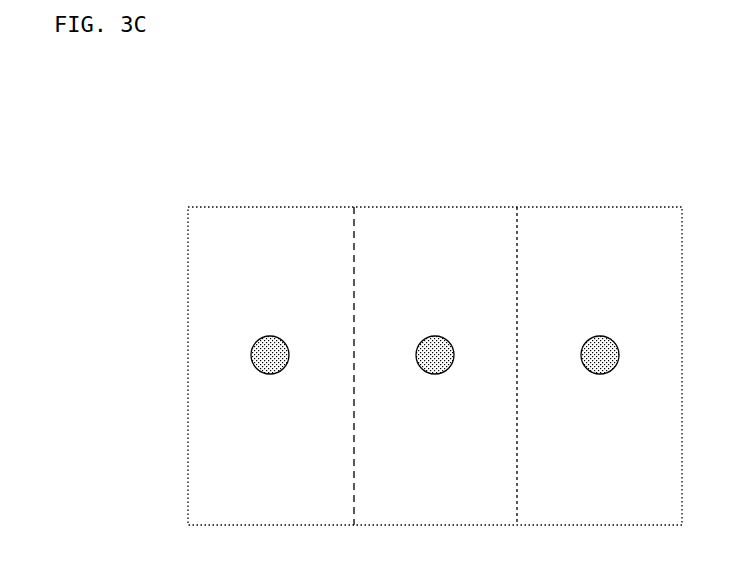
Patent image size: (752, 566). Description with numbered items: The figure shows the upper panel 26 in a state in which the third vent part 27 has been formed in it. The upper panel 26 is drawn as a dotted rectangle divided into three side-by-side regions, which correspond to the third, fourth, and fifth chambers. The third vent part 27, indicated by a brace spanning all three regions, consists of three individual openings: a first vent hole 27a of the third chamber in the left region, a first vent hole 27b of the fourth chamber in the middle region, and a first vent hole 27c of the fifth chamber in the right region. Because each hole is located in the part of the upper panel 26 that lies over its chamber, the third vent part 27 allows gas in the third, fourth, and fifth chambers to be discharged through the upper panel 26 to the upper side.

The upper panel 26 is at (207, 246).
The third vent part 27 is at (637, 141).
The first vent hole of the third chamber 27a is at (270, 336).
The first vent hole of the fourth chamber 27b is at (437, 336).
The first vent hole of the fifth chamber 27c is at (598, 336).